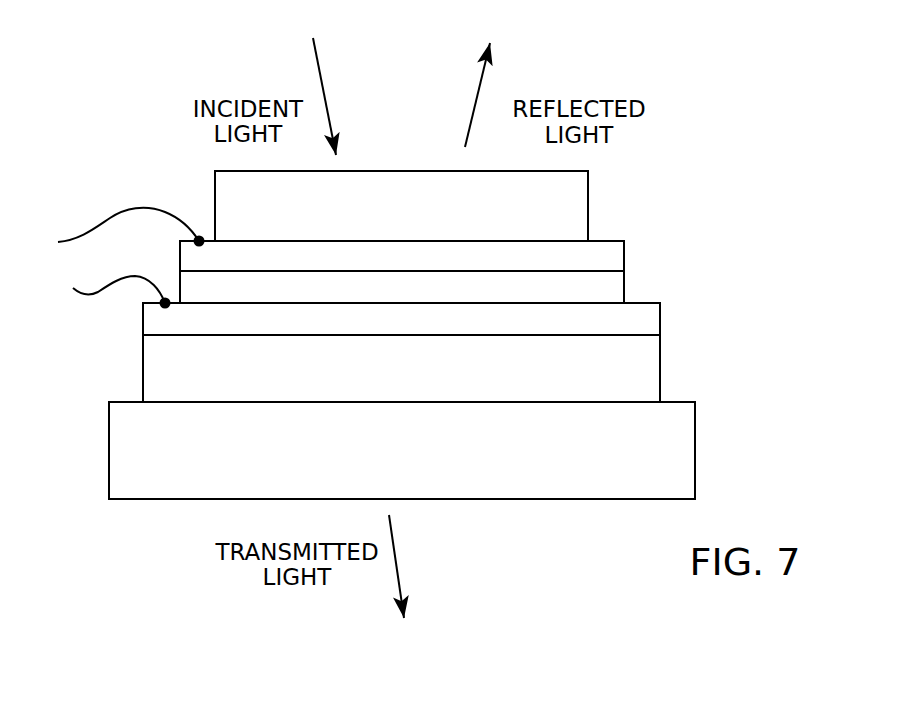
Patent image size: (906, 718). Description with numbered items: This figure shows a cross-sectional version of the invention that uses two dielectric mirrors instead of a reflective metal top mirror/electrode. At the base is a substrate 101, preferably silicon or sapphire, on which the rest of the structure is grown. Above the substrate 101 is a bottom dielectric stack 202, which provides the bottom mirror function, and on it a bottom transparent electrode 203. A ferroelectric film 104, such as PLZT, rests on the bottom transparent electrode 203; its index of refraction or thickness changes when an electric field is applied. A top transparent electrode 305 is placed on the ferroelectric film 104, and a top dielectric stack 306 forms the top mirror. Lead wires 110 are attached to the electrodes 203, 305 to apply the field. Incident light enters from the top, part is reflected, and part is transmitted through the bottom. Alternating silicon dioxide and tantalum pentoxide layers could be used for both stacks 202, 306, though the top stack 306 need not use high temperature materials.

The substrate 101 is at (695, 460).
The bottom dielectric stack 202 is at (660, 373).
The bottom transparent electrode 203 is at (660, 320).
The ferroelectric film 104 is at (625, 293).
The top transparent electrode 305 is at (625, 253).
The top dielectric stack 306 is at (588, 205).
The lead wires 110 is at (132, 207).